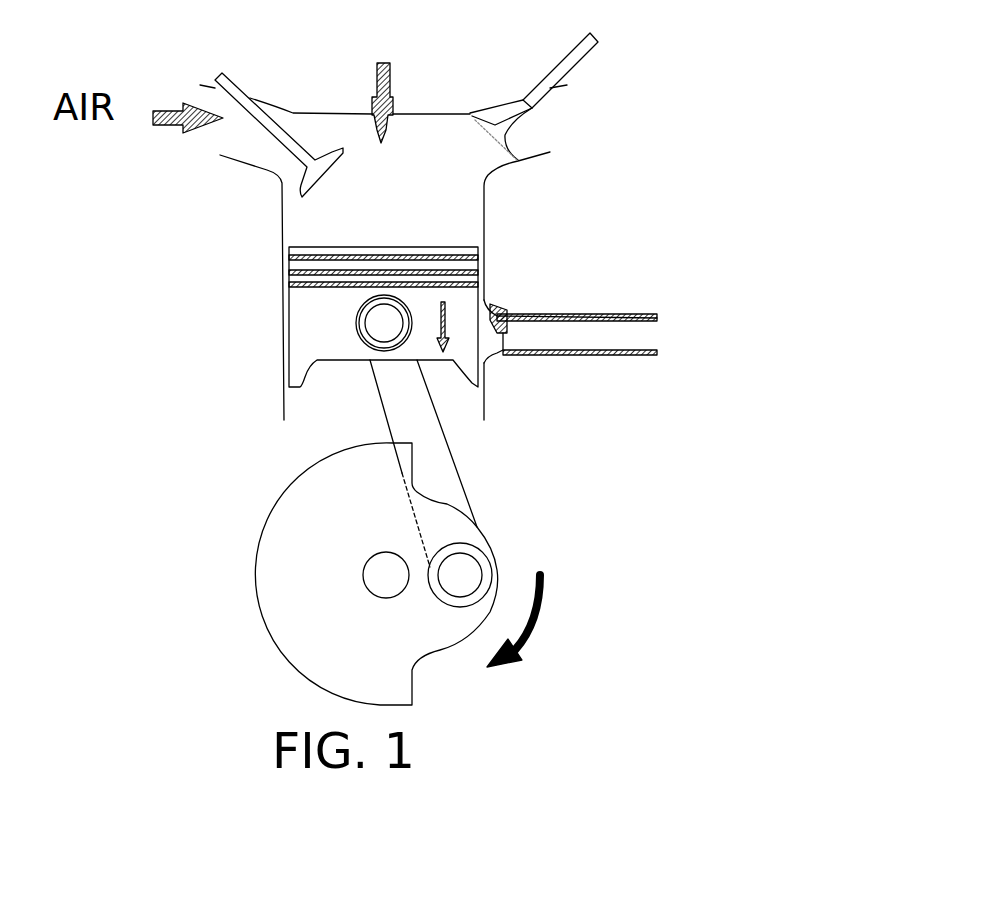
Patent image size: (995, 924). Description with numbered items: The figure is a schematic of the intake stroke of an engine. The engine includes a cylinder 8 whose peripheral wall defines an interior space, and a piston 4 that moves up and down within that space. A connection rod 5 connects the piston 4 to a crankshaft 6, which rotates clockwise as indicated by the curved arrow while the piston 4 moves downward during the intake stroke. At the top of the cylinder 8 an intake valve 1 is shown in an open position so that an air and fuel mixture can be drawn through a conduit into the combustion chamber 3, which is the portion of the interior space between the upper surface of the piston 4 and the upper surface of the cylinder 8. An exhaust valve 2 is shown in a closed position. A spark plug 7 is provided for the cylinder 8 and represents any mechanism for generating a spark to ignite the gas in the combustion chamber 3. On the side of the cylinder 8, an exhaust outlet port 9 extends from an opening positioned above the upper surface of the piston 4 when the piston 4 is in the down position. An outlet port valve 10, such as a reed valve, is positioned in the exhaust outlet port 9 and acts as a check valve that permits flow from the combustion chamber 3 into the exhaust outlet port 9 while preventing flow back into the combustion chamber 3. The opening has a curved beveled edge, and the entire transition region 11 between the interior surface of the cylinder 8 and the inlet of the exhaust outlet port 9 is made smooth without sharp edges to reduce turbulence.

The intake valve 1 is at (243, 118).
The exhaust valve 2 is at (533, 105).
The combustion chamber 3 is at (343, 183).
The piston 4 is at (320, 322).
The connection rod 5 is at (452, 455).
The crankshaft 6 is at (373, 580).
The spark plug 7 is at (387, 72).
The cylinder 8 is at (283, 310).
The exhaust outlet port 9 is at (583, 317).
The outlet port valve 10 is at (500, 330).
The transition region 11 is at (492, 307).